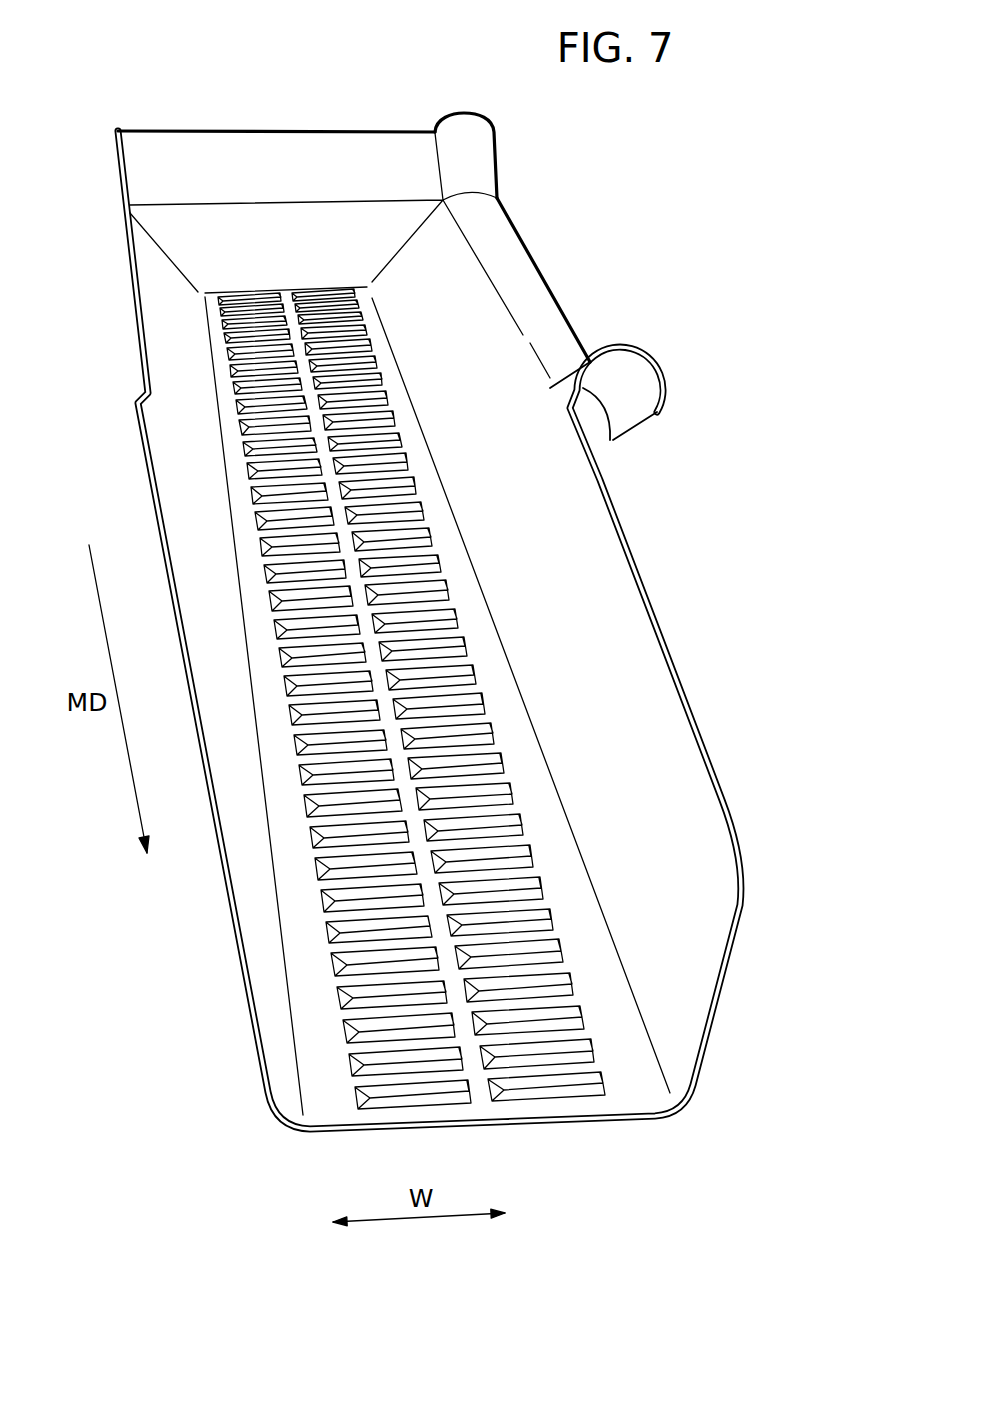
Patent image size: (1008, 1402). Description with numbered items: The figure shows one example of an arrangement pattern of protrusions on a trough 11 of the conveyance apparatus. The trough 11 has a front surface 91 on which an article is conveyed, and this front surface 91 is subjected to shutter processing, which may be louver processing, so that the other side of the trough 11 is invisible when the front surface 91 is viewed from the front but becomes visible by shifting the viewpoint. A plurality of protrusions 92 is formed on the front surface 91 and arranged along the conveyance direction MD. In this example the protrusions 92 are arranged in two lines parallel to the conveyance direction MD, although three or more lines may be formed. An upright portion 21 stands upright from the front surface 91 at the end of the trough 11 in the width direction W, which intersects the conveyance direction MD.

The trough 11 is at (774, 396).
The upright portion 21 is at (575, 625).
The front surface 91 is at (630, 1085).
The protrusion 92 is at (547, 1085).